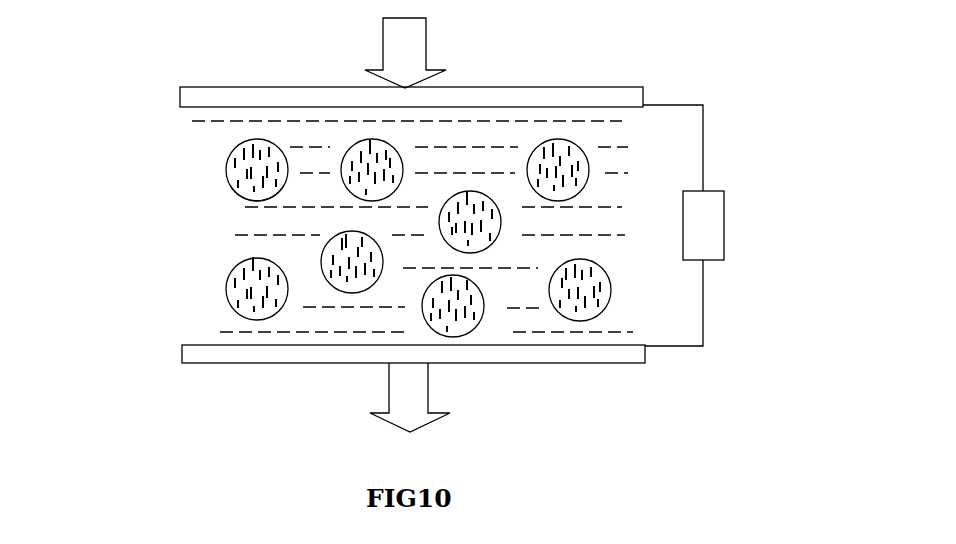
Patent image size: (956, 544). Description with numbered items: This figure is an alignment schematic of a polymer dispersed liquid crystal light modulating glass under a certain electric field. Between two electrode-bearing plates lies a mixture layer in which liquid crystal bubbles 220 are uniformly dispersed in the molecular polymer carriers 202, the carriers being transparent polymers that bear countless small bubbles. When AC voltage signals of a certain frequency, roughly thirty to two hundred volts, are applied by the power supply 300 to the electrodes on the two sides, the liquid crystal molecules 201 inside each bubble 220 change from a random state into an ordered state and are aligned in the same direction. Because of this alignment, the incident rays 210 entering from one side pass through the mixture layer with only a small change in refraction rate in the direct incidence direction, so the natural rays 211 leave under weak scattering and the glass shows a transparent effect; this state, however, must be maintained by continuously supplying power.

The liquid crystal molecules 201 is at (243, 156).
The liquid crystal bubbles 220 is at (243, 198).
The molecular polymer carriers 202 is at (232, 233).
The incident rays 210 is at (426, 35).
The natural rays 211 is at (428, 396).
The power supply 300 is at (724, 223).